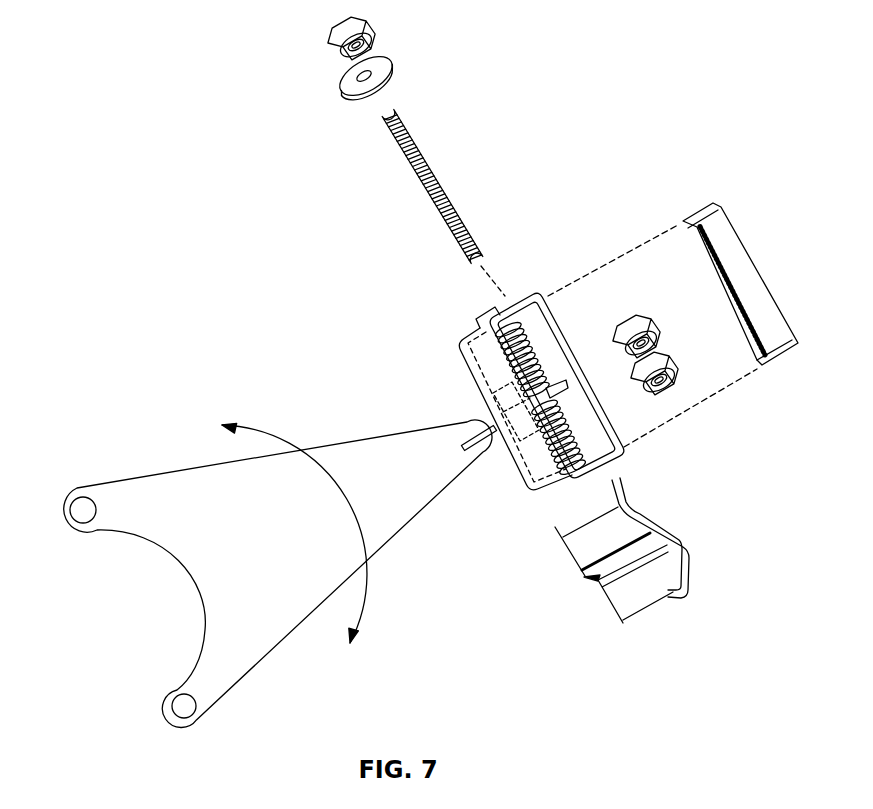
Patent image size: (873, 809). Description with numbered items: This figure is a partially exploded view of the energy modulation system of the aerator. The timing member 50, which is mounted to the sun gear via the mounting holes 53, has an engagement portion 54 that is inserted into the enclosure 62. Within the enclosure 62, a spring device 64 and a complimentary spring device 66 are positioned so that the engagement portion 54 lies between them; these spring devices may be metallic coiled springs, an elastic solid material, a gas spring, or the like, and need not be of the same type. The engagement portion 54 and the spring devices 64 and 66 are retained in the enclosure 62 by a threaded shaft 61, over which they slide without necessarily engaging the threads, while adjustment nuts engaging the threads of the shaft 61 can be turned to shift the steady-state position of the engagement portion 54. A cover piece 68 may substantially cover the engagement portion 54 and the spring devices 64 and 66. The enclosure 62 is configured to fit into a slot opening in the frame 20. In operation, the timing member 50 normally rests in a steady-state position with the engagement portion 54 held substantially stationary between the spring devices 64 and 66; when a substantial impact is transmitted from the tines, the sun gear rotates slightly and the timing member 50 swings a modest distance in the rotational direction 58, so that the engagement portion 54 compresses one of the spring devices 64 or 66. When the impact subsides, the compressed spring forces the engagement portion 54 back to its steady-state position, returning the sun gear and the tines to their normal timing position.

The threaded shaft 61 is at (427, 162).
The enclosure 62 is at (512, 292).
The complimentary spring device 66 is at (523, 345).
The spring device 64 is at (573, 433).
The engagement portion 54 is at (558, 388).
The cover piece 68 is at (740, 257).
The frame 20 is at (630, 530).
The timing member 50 is at (202, 476).
The mounting holes 53 is at (82, 507).
The rotational direction 58 is at (365, 608).